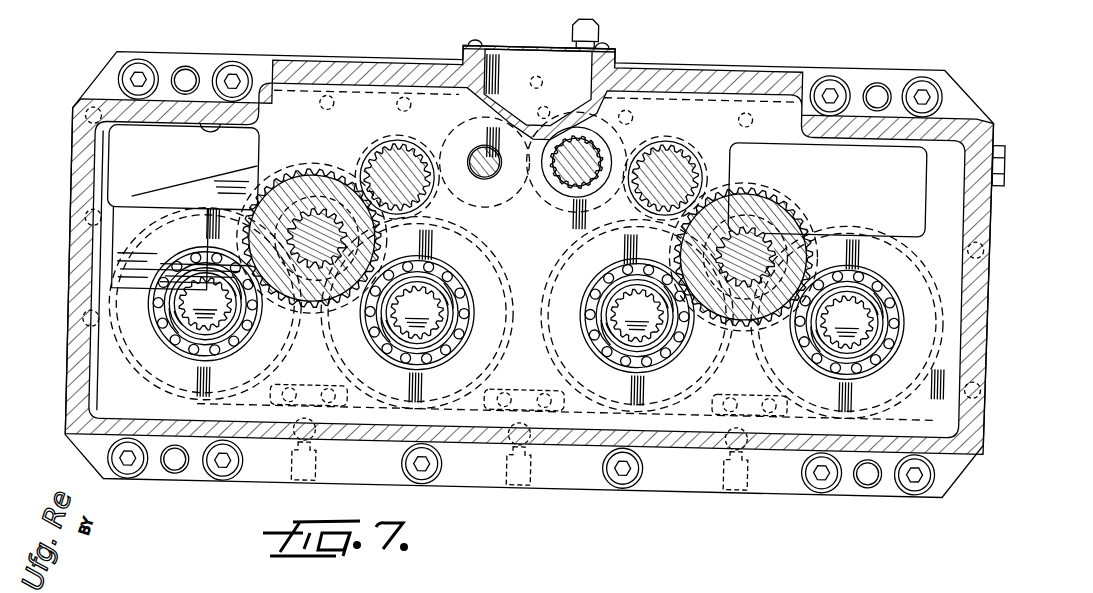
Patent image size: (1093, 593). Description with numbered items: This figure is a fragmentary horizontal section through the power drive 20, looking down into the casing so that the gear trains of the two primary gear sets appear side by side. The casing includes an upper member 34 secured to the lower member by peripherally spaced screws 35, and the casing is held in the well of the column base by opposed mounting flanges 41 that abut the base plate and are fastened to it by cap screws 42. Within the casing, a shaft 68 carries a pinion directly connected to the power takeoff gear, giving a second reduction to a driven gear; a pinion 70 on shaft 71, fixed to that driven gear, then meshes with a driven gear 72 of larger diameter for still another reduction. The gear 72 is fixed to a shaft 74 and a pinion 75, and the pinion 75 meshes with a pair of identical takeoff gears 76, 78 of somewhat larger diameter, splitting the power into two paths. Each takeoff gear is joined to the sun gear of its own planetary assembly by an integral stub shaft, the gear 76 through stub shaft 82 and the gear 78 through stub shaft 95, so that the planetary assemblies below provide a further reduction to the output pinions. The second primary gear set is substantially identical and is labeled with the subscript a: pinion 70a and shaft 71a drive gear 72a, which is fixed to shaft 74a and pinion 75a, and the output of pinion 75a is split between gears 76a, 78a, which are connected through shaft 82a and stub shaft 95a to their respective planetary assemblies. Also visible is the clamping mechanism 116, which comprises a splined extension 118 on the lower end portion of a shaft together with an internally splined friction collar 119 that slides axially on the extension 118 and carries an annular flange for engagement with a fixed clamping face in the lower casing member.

The power drive 20 is at (1016, 111).
The upper casing member 34 is at (995, 290).
The screws 35 is at (992, 432).
The mounting flanges 41 is at (212, 34).
The cap screws 42 is at (230, 86).
The shaft 68 is at (477, 156).
The pinion 70 is at (410, 213).
The pinion 70a is at (660, 212).
The shaft 71 is at (385, 168).
The shaft 71a is at (663, 160).
The driven gear 72 is at (319, 168).
The gear 72a is at (757, 187).
The shaft 74 is at (308, 240).
The shaft 74a is at (758, 224).
The pinion 75 is at (296, 321).
The pinion 75a is at (800, 191).
The takeoff gear 76 is at (288, 372).
The gear 76a is at (716, 368).
The takeoff gear 78 is at (498, 370).
The gear 78a is at (727, 148).
The stub shaft 82 is at (215, 320).
The shaft 82a is at (645, 335).
The stub shaft 95 is at (432, 310).
The stub shaft 95a is at (866, 335).
The clamping mechanism 116 is at (548, 202).
The splined extension 118 is at (574, 148).
The friction collar 119 is at (566, 195).